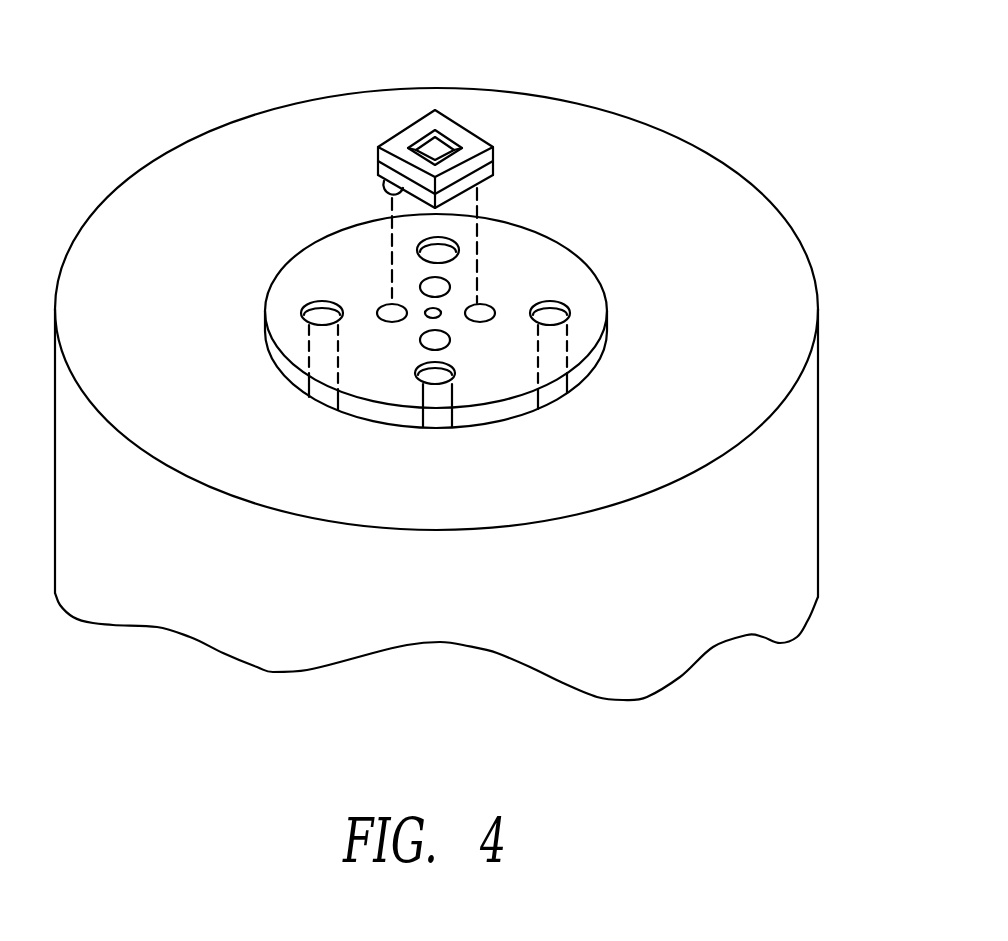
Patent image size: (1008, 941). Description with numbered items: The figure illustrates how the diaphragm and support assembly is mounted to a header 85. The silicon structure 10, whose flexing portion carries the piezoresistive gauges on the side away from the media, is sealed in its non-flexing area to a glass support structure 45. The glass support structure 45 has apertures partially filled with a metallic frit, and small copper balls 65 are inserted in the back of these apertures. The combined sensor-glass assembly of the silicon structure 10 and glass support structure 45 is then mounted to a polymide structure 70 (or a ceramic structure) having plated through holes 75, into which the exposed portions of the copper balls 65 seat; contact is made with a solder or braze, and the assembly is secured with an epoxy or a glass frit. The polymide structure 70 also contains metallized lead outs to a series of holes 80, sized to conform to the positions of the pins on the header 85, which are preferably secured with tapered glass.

The silicon structure 10 is at (470, 118).
The glass support structure 45 is at (503, 162).
The copper balls 65 is at (377, 187).
The polymide structure 70 is at (543, 232).
The plated through holes 75 is at (381, 302).
The holes 80 is at (557, 317).
The header 85 is at (677, 215).